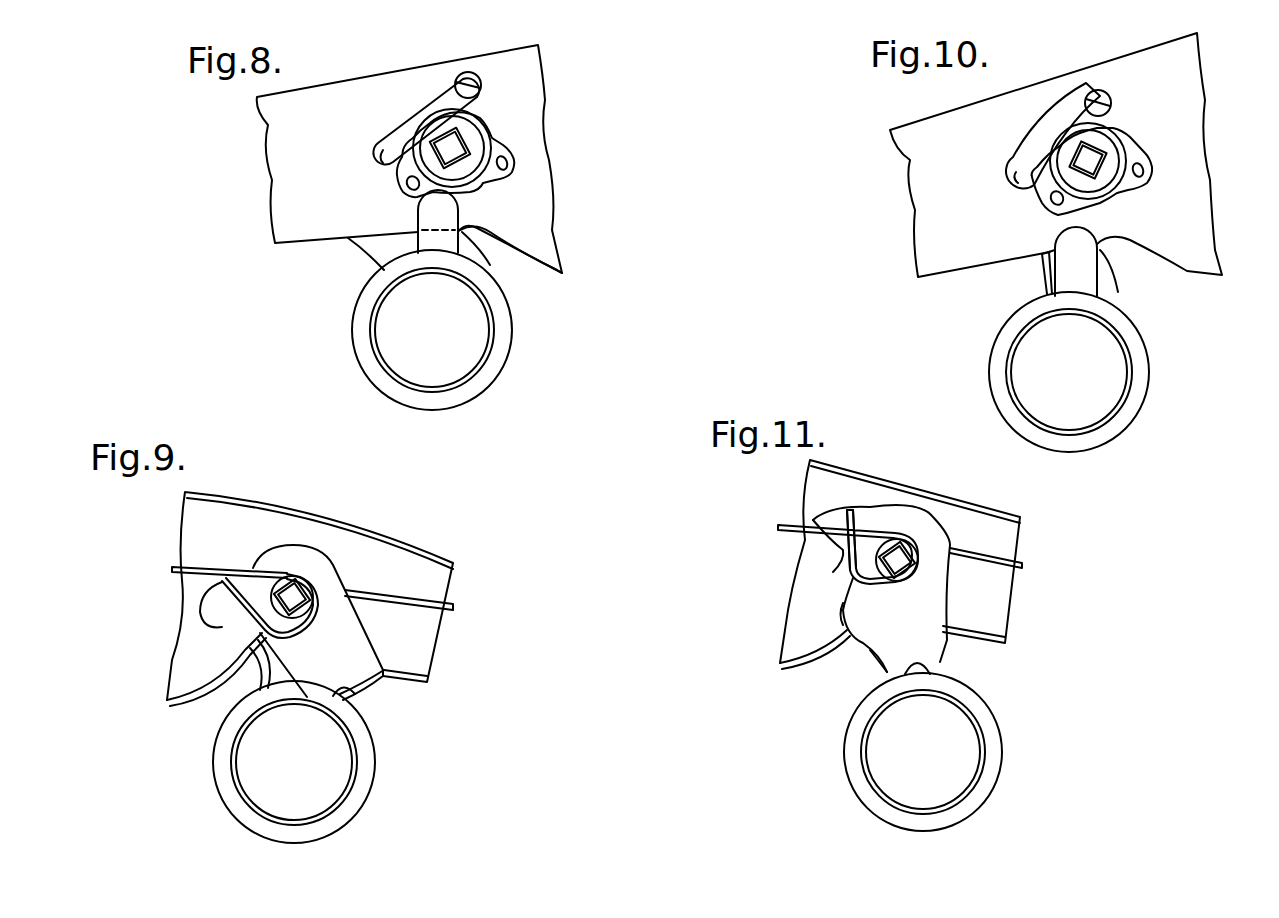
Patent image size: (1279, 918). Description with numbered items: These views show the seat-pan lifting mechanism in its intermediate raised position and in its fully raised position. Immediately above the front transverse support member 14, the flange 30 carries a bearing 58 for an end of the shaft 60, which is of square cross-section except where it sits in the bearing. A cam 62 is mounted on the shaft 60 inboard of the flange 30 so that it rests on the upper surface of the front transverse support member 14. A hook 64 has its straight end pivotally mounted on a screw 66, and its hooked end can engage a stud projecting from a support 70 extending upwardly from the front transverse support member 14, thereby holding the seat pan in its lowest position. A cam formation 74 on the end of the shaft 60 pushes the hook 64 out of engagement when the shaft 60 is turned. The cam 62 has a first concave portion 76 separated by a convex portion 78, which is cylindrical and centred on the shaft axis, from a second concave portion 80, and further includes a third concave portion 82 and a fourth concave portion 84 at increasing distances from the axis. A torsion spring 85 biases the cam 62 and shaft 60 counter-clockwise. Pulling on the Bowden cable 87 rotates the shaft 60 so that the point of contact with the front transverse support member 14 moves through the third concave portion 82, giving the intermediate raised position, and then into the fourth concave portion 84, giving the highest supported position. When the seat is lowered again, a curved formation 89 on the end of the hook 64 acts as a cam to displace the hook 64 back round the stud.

In FIG. 8, the front transverse support member 14 is at (505, 312).
In FIG. 10, the front transverse support member 14 is at (1136, 343).
In FIG. 9, the front transverse support member 14 is at (229, 790).
In FIG. 11, the front transverse support member 14 is at (853, 758).
In FIG. 8, the flange 30 is at (282, 182).
In FIG. 10, the flange 30 is at (1198, 195).
In FIG. 9, the flange 30 is at (420, 647).
In FIG. 11, the flange 30 is at (1002, 627).
In FIG. 8, the bearing 58 is at (476, 175).
In FIG. 10, the bearing 58 is at (1118, 195).
In FIG. 8, the shaft 60 is at (472, 140).
In FIG. 10, the shaft 60 is at (1120, 152).
In FIG. 9, the shaft 60 is at (300, 604).
In FIG. 11, the shaft 60 is at (913, 577).
In FIG. 8, the cam 62 is at (366, 253).
In FIG. 10, the cam 62 is at (1116, 264).
In FIG. 9, the cam 62 is at (313, 562).
In FIG. 11, the cam 62 is at (930, 532).
In FIG. 8, the hook 64 is at (418, 110).
In FIG. 10, the hook 64 is at (1037, 140).
In FIG. 8, the screw 66 is at (481, 86).
In FIG. 10, the screw 66 is at (1108, 95).
In FIG. 10, the support 70 is at (1050, 268).
In FIG. 8, the cam formation 74 is at (446, 130).
In FIG. 10, the cam formation 74 is at (1101, 141).
In FIG. 9, the first concave portion 76 is at (223, 627).
In FIG. 11, the first concave portion 76 is at (833, 550).
In FIG. 9, the convex portion 78 is at (240, 647).
In FIG. 11, the convex portion 78 is at (833, 572).
In FIG. 9, the second concave portion 80 is at (263, 680).
In FIG. 11, the second concave portion 80 is at (843, 603).
In FIG. 9, the third concave portion 82 is at (343, 700).
In FIG. 11, the third concave portion 82 is at (943, 667).
In FIG. 9, the fourth concave portion 84 is at (370, 687).
In FIG. 11, the fourth concave portion 84 is at (870, 650).
In FIG. 9, the torsion spring 85 is at (192, 643).
In FIG. 11, the torsion spring 85 is at (873, 588).
In FIG. 9, the Bowden cable 87 is at (428, 596).
In FIG. 11, the Bowden cable 87 is at (1010, 543).
In FIG. 8, the curved formation 89 is at (386, 163).
In FIG. 10, the curved formation 89 is at (1018, 181).